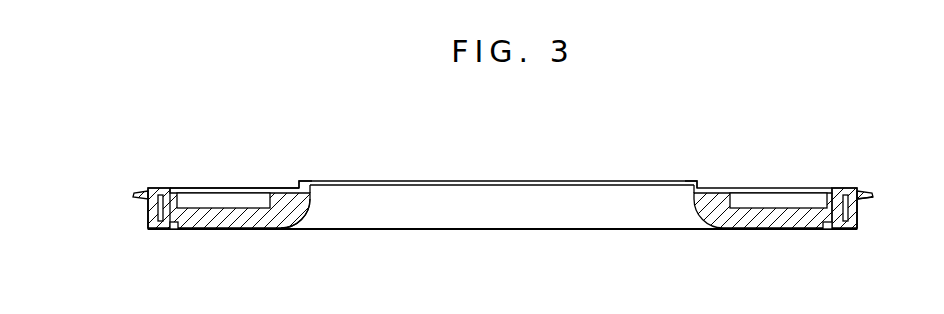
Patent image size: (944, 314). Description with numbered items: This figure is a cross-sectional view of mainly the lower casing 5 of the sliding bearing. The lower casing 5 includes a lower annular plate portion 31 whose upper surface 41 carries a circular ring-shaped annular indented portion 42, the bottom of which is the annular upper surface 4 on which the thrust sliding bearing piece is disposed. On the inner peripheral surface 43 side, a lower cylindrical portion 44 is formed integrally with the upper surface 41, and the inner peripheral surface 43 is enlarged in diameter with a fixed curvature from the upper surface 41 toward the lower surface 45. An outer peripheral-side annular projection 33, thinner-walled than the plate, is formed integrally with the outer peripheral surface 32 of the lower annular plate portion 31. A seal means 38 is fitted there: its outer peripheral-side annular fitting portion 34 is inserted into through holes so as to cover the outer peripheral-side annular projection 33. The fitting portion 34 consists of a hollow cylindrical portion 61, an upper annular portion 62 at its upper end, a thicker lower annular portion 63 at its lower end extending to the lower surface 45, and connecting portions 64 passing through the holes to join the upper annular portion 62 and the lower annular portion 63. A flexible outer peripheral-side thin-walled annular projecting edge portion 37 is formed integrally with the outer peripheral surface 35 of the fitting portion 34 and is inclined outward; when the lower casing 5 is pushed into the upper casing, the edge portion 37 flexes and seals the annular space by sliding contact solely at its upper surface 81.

The annular upper surface 4 is at (788, 207).
The lower casing 5 is at (700, 185).
The lower annular plate portion 31 is at (250, 226).
The outer peripheral surface 32 is at (166, 188).
The outer peripheral-side annular projection 33 is at (149, 219).
The outer peripheral-side annular fitting portion 34 is at (161, 230).
The outer peripheral surface 35 is at (150, 206).
The outer peripheral-side thin-walled annular projecting edge portion 37 is at (137, 193).
The seal means 38 is at (862, 191).
The upper surface 41 is at (288, 188).
The annular indented portion 42 is at (263, 206).
The inner peripheral surface 43 is at (306, 213).
The lower cylindrical portion 44 is at (302, 183).
The lower surface 45 is at (412, 231).
The hollow cylindrical portion 61 is at (858, 213).
The upper annular portion 62 is at (849, 190).
The lower annular portion 63 is at (832, 228).
The connecting portions 64 is at (830, 194).
The upper surface 81 is at (872, 195).